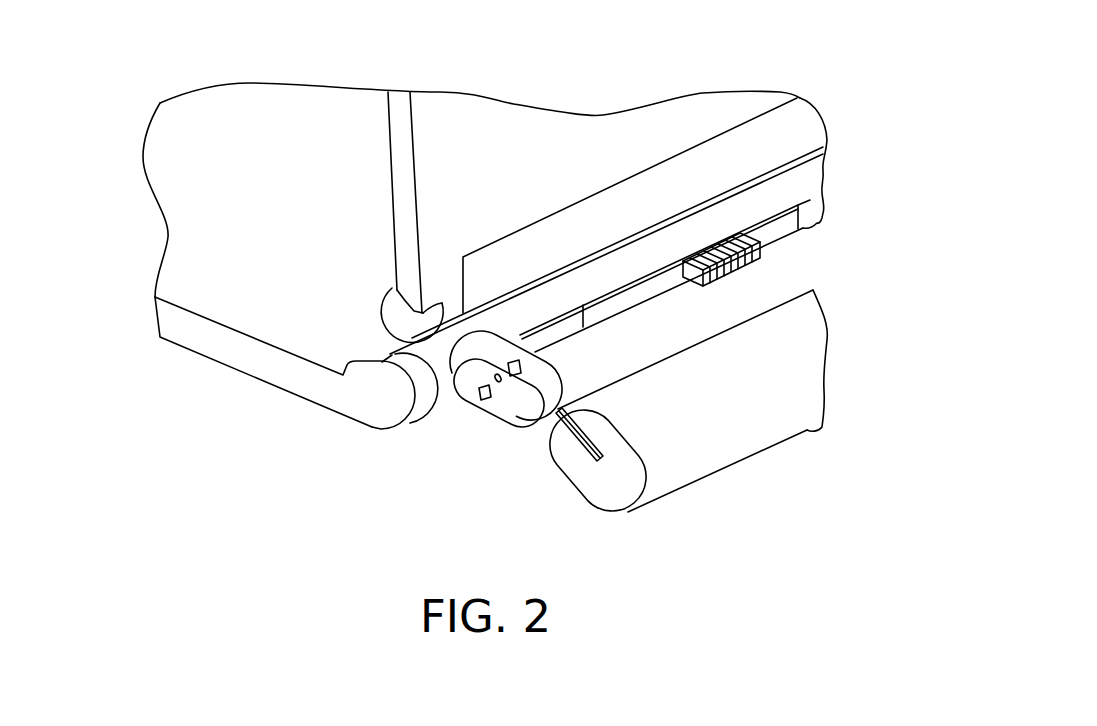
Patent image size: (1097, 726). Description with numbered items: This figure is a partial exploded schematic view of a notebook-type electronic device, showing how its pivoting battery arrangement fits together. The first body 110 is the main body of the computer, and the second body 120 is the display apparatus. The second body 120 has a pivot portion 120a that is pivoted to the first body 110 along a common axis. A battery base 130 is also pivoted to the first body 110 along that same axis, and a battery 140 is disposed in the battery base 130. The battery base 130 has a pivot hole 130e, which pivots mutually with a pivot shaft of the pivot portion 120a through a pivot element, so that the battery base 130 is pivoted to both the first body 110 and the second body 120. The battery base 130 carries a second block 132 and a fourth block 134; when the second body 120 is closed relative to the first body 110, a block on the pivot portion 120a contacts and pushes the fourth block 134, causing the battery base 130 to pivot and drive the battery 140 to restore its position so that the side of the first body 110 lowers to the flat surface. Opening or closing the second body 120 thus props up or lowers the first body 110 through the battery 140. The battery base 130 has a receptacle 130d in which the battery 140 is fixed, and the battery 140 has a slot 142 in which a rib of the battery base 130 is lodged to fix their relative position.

The first body 110 is at (240, 355).
The second body 120 is at (453, 157).
The pivot portion 120a is at (403, 317).
The battery base 130 is at (527, 410).
The receptacle 130d is at (620, 302).
The pivot hole 130e is at (500, 382).
The second block 132 is at (465, 370).
The fourth block 134 is at (480, 400).
The battery 140 is at (752, 413).
The slot 142 is at (565, 443).